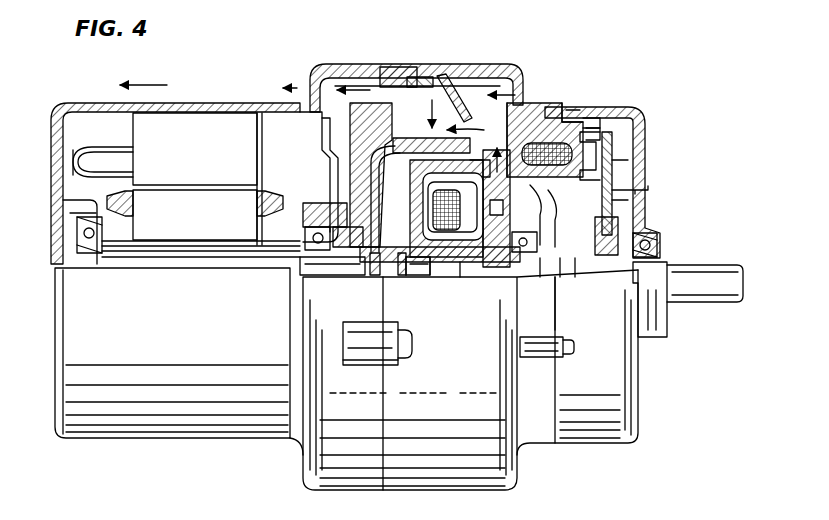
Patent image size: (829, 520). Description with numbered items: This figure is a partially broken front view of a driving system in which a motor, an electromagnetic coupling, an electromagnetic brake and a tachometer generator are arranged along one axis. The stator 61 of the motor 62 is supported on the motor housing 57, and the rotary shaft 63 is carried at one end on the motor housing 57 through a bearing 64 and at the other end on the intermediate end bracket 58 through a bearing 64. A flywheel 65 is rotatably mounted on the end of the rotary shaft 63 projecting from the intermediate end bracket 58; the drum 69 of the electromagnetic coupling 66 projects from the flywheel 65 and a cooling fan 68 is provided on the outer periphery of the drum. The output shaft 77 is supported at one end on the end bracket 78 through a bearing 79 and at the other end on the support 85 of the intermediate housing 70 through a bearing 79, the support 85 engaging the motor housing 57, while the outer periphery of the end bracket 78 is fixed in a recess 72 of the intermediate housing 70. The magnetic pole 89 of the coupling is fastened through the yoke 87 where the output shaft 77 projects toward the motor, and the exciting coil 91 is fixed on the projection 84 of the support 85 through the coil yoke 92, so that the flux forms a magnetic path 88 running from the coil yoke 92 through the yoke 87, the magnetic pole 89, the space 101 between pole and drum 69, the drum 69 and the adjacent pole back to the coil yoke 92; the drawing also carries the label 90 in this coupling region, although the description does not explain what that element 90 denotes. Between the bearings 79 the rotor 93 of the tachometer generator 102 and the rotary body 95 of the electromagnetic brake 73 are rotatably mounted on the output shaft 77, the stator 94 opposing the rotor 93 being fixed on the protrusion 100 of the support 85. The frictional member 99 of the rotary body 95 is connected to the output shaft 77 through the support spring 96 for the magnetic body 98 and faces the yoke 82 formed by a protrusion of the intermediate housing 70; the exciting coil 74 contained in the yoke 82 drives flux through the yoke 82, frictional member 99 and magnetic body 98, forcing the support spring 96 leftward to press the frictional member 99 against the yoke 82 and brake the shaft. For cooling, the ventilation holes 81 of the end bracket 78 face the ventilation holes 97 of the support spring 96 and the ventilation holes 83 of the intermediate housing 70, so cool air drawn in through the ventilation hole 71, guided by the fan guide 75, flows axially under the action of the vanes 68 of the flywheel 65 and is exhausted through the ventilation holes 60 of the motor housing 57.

The motor housing 57 is at (190, 108).
The intermediate end bracket 58 is at (325, 138).
The ventilation holes 60 is at (312, 100).
The stator 61 is at (172, 160).
The motor 62 is at (126, 147).
The rotary shaft 63 is at (200, 270).
The bearing 64 is at (88, 262).
The flywheel 65 is at (365, 150).
The electromagnetic coupling 66 is at (437, 80).
The cooling fan 68 is at (398, 68).
The drum 69 is at (440, 138).
The intermediate housing 70 is at (488, 110).
The ventilation hole 71 is at (520, 102).
The recess 72 is at (552, 118).
The electromagnetic brake 73 is at (570, 118).
The exciting coil 74 is at (580, 135).
The fan guide 75 is at (460, 100).
The output shaft 77 is at (710, 302).
The end bracket 78 is at (650, 140).
The bearing 79 is at (660, 248).
The ventilation holes 81 is at (652, 196).
The yoke 82 is at (620, 115).
The ventilation holes 83 is at (500, 265).
The projection 84 is at (490, 262).
The support 85 is at (522, 256).
The yoke 87 is at (422, 265).
The magnetic path 88 is at (445, 262).
The magnetic pole 89 is at (420, 185).
The bobbin 90 is at (420, 230).
The exciting coil 91 is at (455, 265).
The coil yoke 92 is at (470, 265).
The rotor 93 is at (548, 262).
The stator 94 is at (585, 262).
The rotary body 95 is at (572, 262).
The support spring 96 is at (622, 222).
The ventilation holes 97 is at (604, 195).
The magnetic body 98 is at (615, 158).
The frictional member 99 is at (632, 132).
The protrusion 100 is at (628, 182).
The space 101 is at (392, 199).
The tachometer generator 102 is at (580, 362).